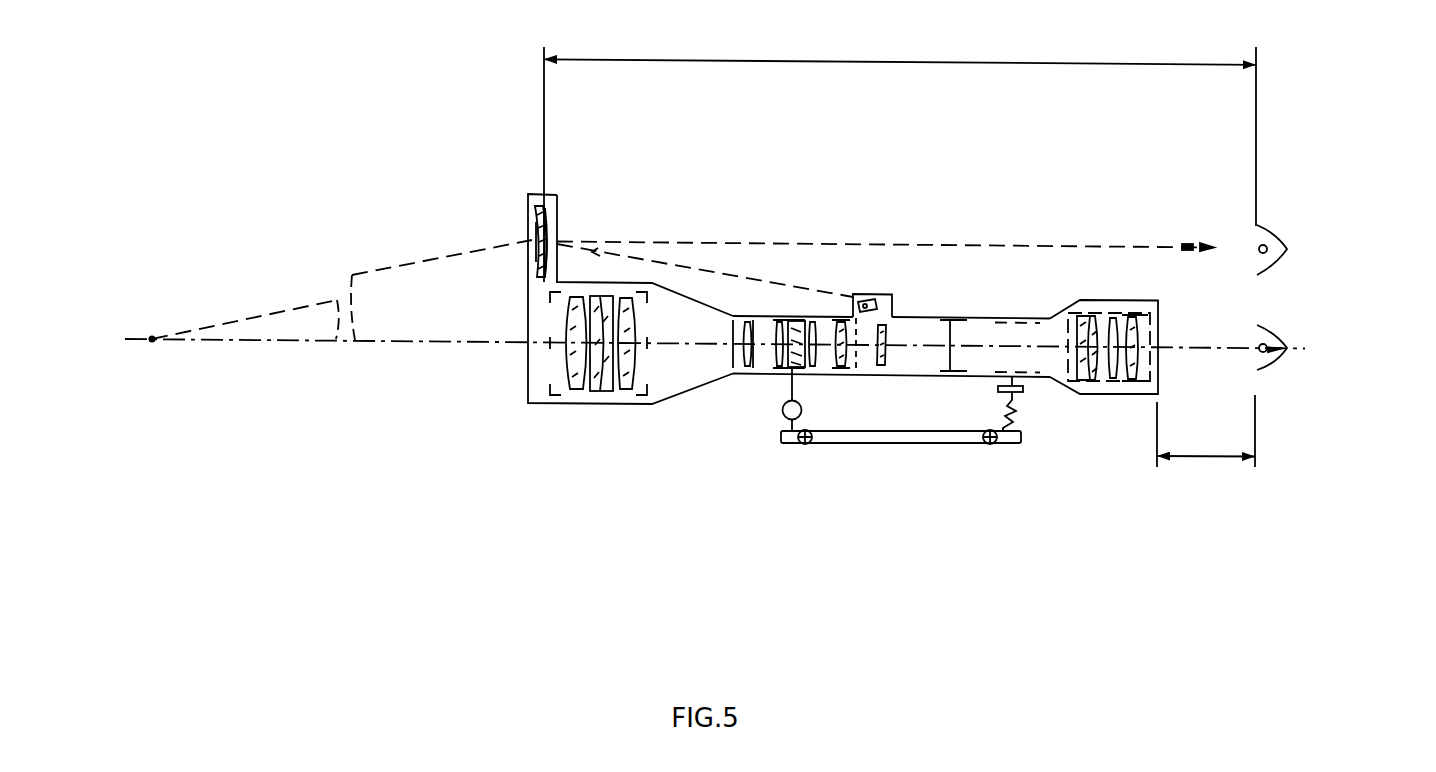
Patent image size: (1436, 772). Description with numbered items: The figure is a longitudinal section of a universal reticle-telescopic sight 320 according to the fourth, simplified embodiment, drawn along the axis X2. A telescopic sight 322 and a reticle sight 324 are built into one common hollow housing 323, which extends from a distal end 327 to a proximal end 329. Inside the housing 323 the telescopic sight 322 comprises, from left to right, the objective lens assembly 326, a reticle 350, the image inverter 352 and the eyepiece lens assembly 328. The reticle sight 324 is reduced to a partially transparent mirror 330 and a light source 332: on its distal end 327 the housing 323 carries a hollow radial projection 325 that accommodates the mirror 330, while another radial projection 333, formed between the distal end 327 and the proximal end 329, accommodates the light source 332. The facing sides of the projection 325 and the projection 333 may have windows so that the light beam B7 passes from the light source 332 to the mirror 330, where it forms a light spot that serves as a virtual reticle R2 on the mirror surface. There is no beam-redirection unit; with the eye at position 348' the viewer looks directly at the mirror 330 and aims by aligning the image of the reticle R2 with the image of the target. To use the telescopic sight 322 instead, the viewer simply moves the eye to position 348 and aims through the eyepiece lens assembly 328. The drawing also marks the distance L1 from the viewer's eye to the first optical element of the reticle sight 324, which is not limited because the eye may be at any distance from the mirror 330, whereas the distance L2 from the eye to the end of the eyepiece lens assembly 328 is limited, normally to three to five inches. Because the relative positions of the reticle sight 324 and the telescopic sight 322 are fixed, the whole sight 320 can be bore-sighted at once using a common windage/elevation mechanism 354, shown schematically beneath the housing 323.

The universal reticle-telescopic sight 320 is at (822, 218).
The telescopic sight 322 is at (620, 417).
The hollow housing 323 is at (973, 318).
The reticle sight 324 is at (508, 182).
The hollow radial projection 325 is at (585, 213).
The objective lens assembly 326 is at (560, 405).
The distal end 327 is at (531, 200).
The eyepiece lens assembly 328 is at (1100, 385).
The proximal end 329 is at (1158, 300).
The partially transparent mirror 330 is at (532, 233).
The light source 332 is at (868, 303).
The radial projection 333 is at (897, 292).
The eye position 348 is at (1331, 316).
The eye position 348' is at (1332, 211).
The reticle 350 is at (882, 363).
The image inverter 352 is at (780, 355).
The windage/elevation mechanism 354 is at (961, 437).
The virtual reticle R2 is at (567, 227).
The light beam B7 is at (713, 282).
The optical axis X2 is at (707, 343).
The distance from viewer's eye to first optical element of the reticle sight L1 is at (900, 158).
The distance from viewer's eye to end of the eyepiece lens assembly L2 is at (1206, 431).